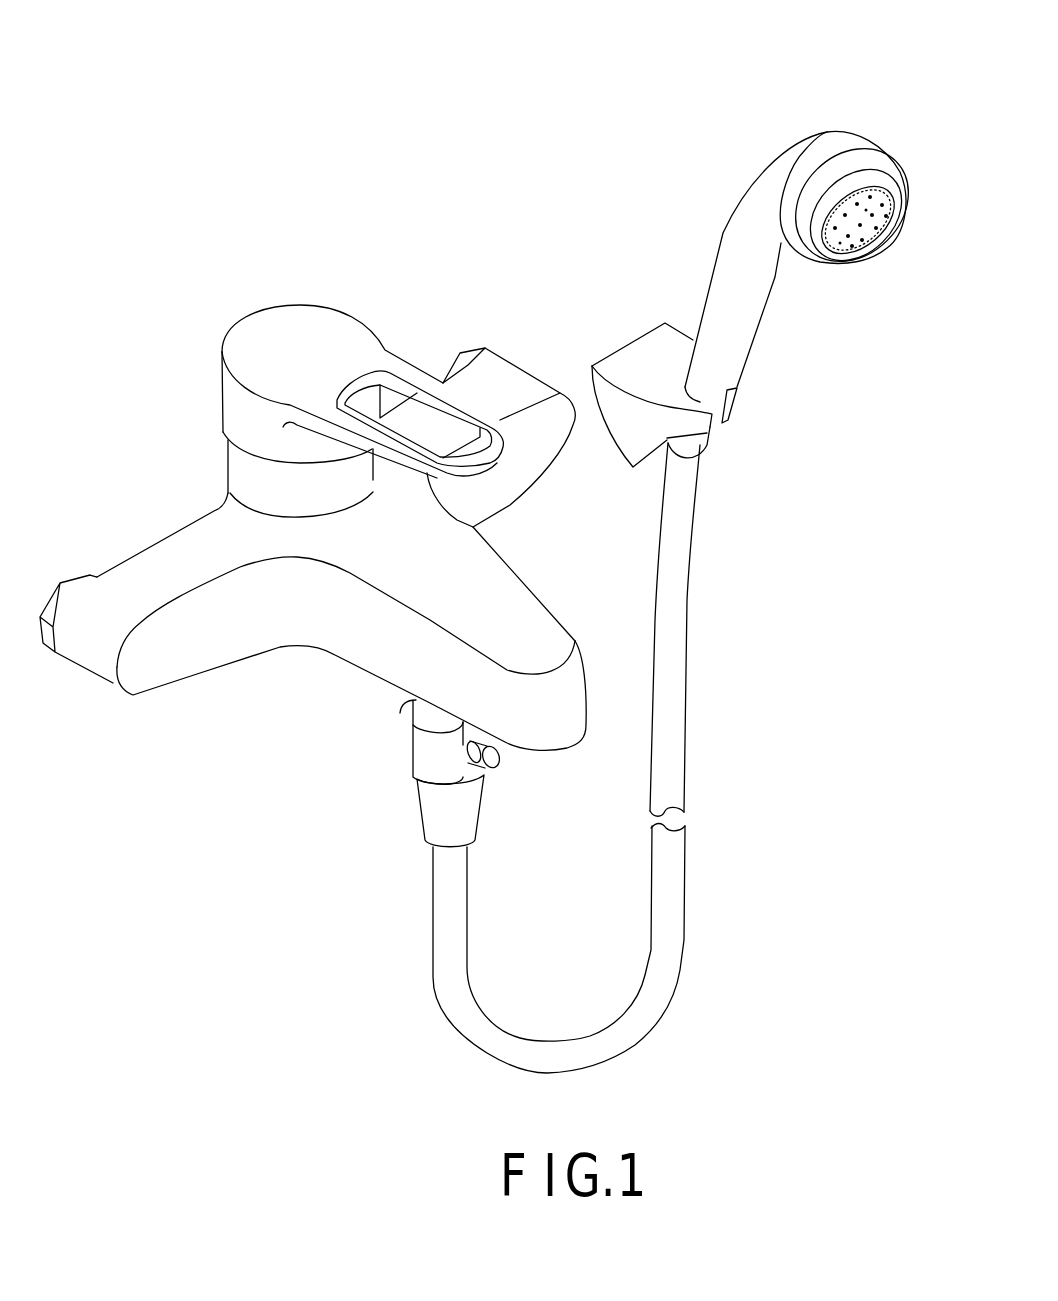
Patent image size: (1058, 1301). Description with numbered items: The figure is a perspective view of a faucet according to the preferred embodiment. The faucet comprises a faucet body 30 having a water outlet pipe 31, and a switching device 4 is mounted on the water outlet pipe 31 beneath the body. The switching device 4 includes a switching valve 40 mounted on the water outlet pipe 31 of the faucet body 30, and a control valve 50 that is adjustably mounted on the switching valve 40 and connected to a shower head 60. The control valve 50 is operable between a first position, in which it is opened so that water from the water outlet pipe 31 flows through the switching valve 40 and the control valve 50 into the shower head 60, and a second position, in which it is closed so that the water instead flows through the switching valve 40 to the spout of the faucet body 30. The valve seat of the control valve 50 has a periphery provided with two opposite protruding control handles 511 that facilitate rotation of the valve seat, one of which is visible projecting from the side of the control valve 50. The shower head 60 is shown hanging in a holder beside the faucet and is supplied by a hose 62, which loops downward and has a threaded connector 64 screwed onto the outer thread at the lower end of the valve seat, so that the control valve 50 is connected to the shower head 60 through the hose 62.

The switching device 4 is at (329, 762).
The faucet body 30 is at (342, 312).
The water outlet pipe 31 is at (488, 578).
The switching valve 40 is at (412, 716).
The control valve 50 is at (412, 749).
The control handle 511 is at (500, 760).
The shower head 60 is at (778, 163).
The hose 62 is at (452, 1007).
The threaded connector 64 is at (431, 813).